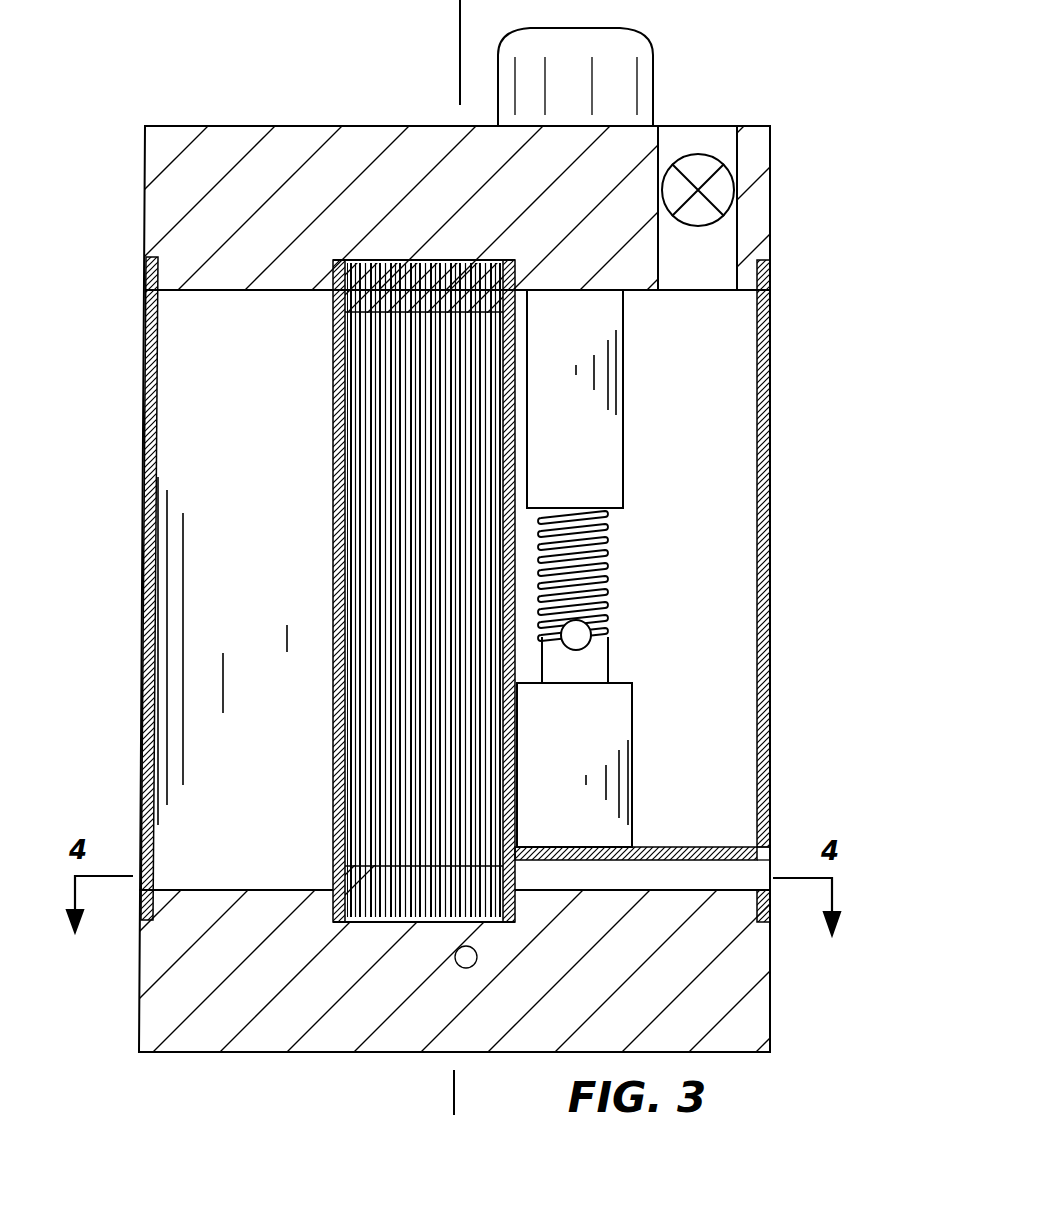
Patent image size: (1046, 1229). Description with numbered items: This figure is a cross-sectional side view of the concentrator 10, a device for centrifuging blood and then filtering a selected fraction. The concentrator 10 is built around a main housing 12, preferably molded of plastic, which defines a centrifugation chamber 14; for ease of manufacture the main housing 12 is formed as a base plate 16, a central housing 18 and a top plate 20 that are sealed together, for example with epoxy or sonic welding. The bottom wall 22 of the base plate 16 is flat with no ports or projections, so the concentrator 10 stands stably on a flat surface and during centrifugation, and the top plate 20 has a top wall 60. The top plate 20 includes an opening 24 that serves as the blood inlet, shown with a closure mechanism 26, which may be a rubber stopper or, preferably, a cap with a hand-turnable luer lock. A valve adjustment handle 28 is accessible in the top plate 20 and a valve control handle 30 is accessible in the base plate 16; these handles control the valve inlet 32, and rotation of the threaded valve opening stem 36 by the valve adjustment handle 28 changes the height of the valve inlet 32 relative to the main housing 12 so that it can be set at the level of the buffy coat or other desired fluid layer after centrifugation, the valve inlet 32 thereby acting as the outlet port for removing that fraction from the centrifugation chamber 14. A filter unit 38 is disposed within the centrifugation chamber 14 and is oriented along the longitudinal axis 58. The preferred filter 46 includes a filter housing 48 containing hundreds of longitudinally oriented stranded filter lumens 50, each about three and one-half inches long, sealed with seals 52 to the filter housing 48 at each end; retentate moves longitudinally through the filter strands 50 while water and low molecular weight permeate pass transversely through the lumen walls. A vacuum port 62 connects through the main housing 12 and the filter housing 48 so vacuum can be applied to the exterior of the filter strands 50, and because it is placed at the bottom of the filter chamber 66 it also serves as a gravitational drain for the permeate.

The concentrator 10 is at (122, 108).
The main housing 12 is at (790, 347).
The centrifugation chamber 14 is at (226, 362).
The base plate 16 is at (295, 1027).
The central housing 18 is at (143, 363).
The top plate 20 is at (358, 140).
The bottom wall 22 is at (400, 1053).
The opening 24 is at (673, 145).
The closure mechanism 26 is at (714, 152).
The valve adjustment handle 28 is at (622, 44).
The valve control handle 30 is at (475, 963).
The valve inlet 32 is at (590, 640).
The threaded valve opening stem 36 is at (603, 553).
The filter unit 38 is at (333, 417).
The filter 46 is at (348, 472).
The filter housing 48 is at (333, 523).
The filter strands 50 is at (333, 678).
The seals 52 is at (363, 300).
The longitudinal axis 58 is at (460, 72).
The top wall 60 is at (188, 126).
The vacuum port 62 is at (758, 877).
The filter chamber 66 is at (357, 752).